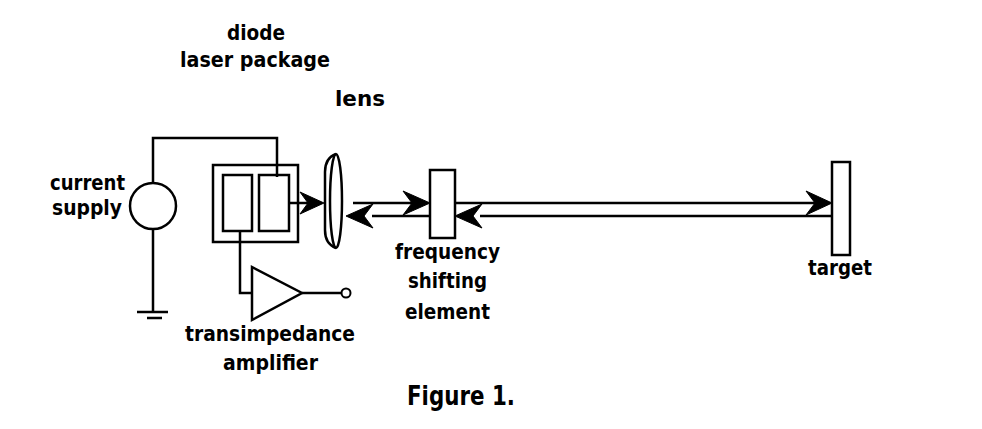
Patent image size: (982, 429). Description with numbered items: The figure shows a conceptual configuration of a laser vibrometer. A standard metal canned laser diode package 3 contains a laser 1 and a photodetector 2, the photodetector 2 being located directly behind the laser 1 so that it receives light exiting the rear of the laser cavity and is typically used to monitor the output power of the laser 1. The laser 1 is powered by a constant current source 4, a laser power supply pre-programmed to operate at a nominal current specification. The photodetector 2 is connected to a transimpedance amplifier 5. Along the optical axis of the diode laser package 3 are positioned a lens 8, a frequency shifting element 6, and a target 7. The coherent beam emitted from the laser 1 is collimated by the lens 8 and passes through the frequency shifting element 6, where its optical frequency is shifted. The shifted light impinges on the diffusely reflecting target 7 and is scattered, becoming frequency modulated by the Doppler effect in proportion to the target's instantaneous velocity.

The laser 1 is at (274, 203).
The photodetector 2 is at (237, 203).
The laser diode package 3 is at (295, 165).
The constant current source 4 is at (153, 206).
The transimpedance amplifier 5 is at (301, 293).
The frequency shifting element 6 is at (442, 188).
The target 7 is at (840, 191).
The lens 8 is at (347, 163).